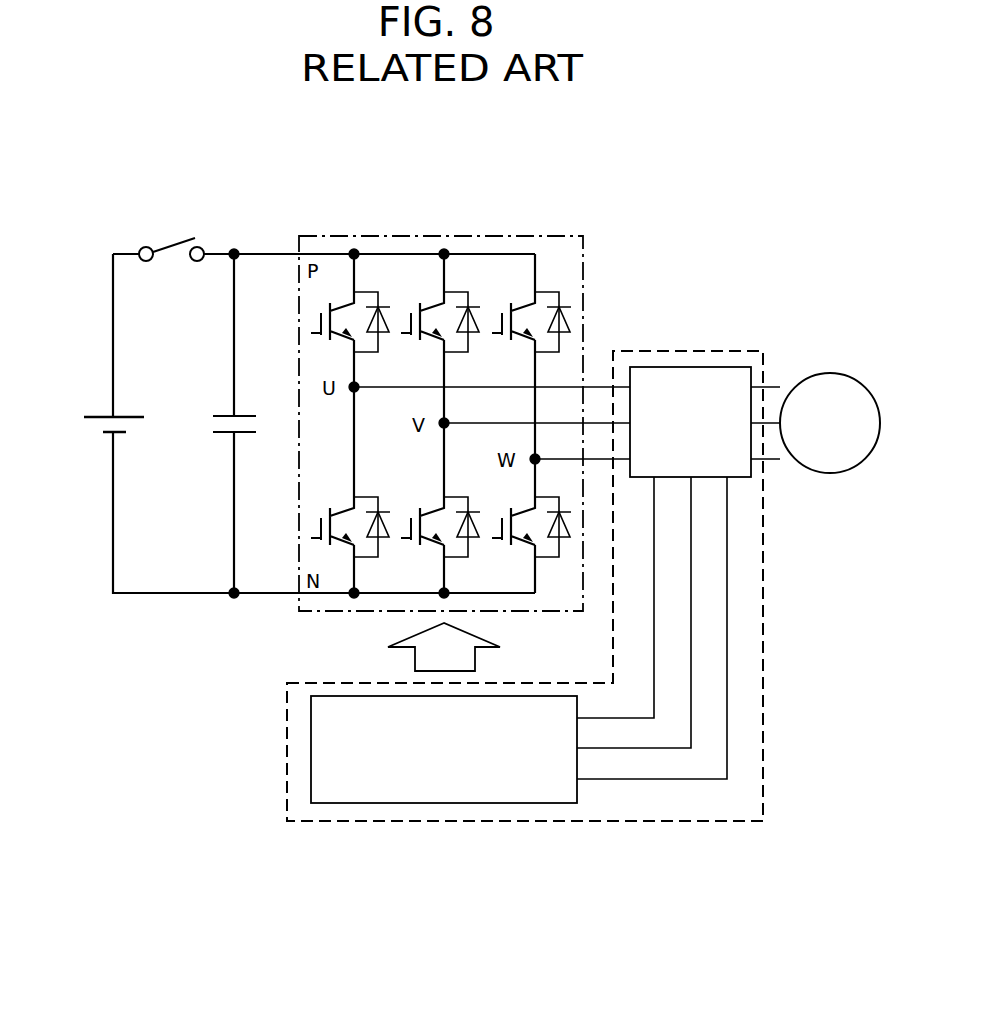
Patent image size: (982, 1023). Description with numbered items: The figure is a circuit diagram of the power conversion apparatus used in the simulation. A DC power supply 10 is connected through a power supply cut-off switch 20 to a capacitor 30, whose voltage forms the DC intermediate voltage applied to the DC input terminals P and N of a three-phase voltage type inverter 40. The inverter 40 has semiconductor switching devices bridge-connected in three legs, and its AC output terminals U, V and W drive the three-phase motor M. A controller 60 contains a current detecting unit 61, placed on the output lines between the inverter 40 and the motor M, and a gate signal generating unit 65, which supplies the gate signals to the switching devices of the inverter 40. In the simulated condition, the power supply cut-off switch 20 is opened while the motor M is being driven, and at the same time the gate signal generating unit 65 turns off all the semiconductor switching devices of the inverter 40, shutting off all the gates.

The DC power supply 10 is at (93, 405).
The power supply cut-off switch 20 is at (160, 240).
The capacitor 30 is at (245, 402).
The three-phase voltage type inverter 40 is at (357, 236).
The controller 60 is at (287, 713).
The current detecting unit 61 is at (678, 375).
The gate signal generating unit 65 is at (346, 790).